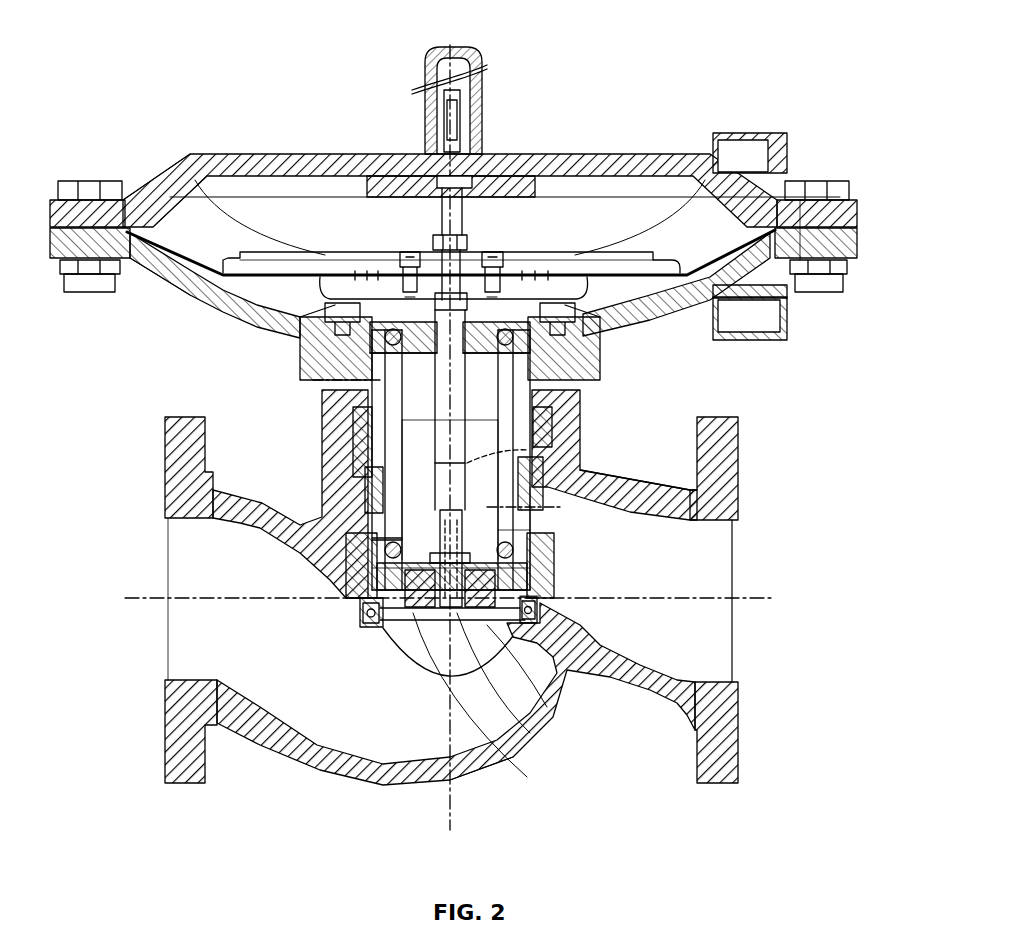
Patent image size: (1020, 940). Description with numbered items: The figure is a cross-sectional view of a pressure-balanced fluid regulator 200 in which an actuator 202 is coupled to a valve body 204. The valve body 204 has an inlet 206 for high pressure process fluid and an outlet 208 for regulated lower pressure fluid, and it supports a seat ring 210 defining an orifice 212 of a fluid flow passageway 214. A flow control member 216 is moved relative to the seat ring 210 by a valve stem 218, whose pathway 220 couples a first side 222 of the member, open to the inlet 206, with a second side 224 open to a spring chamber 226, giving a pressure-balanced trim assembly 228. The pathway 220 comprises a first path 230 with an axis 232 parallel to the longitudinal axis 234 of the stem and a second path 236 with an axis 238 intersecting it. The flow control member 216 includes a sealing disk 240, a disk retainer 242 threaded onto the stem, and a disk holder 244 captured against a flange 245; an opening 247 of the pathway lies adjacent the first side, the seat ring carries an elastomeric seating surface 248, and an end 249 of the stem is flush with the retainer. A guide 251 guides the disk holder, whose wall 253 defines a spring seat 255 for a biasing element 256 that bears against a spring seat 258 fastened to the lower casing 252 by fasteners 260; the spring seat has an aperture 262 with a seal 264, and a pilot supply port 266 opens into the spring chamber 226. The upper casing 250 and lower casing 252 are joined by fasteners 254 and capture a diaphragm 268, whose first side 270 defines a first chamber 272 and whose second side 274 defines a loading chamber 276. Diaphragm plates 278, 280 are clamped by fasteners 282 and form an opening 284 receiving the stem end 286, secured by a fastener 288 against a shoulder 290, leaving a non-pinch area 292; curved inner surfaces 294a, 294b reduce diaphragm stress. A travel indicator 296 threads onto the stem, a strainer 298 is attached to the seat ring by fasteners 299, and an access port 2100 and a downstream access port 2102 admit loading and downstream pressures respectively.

The fluid regulator 200 is at (656, 36).
The actuator 202 is at (760, 110).
The valve body 204 is at (332, 765).
The inlet 206 is at (163, 632).
The outlet 208 is at (742, 562).
The seat ring 210 is at (357, 608).
The orifice 212 is at (403, 637).
The fluid flow passageway 214 is at (418, 720).
The flow control member 216 is at (570, 558).
The valve stem 218 is at (540, 387).
The pathway 220 is at (530, 510).
The first side 222 is at (547, 707).
The second side 224 is at (392, 530).
The spring chamber 226 is at (420, 427).
The pressure-balanced trim assembly 228 is at (629, 538).
The first path 230 is at (510, 567).
The axis 232 is at (370, 562).
The longitudinal axis 234 is at (443, 463).
The second path 236 is at (530, 453).
The axis 238 is at (423, 507).
The sealing disk 240 is at (372, 585).
The disk retainer 242 is at (368, 620).
The disk holder 244 is at (373, 538).
The flange 245 is at (512, 533).
The opening 247 is at (410, 672).
The seating surface 248 is at (542, 596).
The end 249 is at (530, 733).
The upper casing 250 is at (212, 155).
The guide 251 is at (540, 433).
The lower casing 252 is at (212, 272).
The wall 253 is at (578, 472).
The fasteners 254 is at (84, 180).
The spring seat 255 is at (380, 538).
The biasing element 256 is at (552, 413).
The spring seat 258 is at (597, 345).
The fasteners 260 is at (300, 318).
The aperture 262 is at (573, 367).
The seal 264 is at (333, 338).
The pilot supply port 266 is at (317, 390).
The diaphragm 268 is at (800, 270).
The first side 270 is at (172, 240).
The first chamber 272 is at (428, 225).
The second side 274 is at (222, 268).
The loading chamber 276 is at (302, 303).
The diaphragm plate 278 is at (565, 300).
The diaphragm plate 280 is at (657, 152).
The fasteners 282 is at (400, 256).
The opening 284 is at (435, 268).
The end 286 is at (437, 240).
The fastener 288 is at (497, 268).
The shoulder 290 is at (203, 155).
The non-pinch area 292 is at (240, 312).
The inner surface 294a is at (207, 192).
The inner surface 294b is at (222, 281).
The travel indicator 296 is at (425, 100).
The strainer 298 is at (527, 777).
The fasteners 299 is at (590, 623).
The access port 2100 is at (767, 326).
The downstream access port 2102 is at (787, 158).